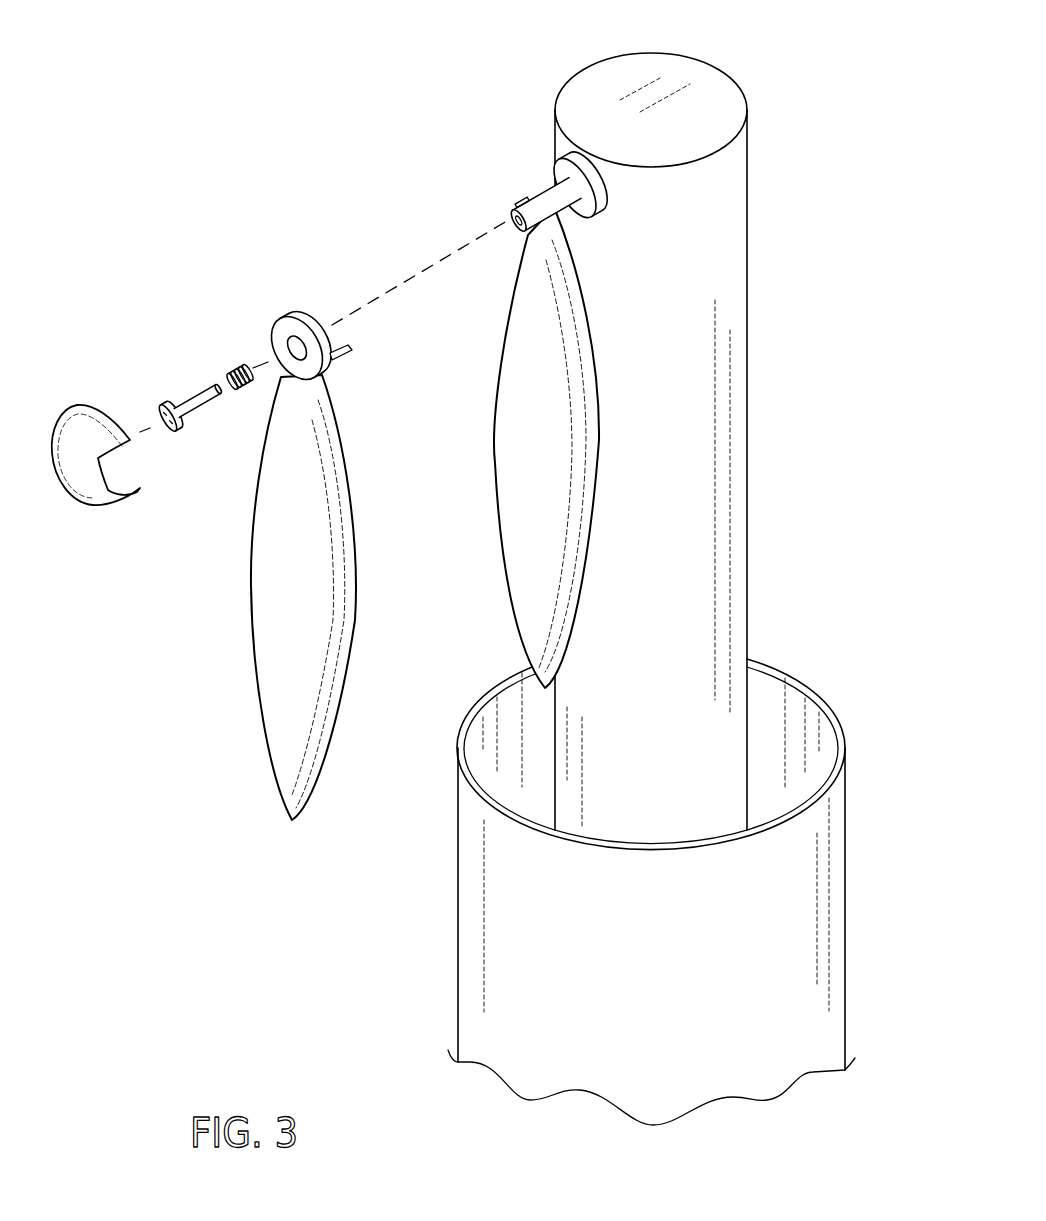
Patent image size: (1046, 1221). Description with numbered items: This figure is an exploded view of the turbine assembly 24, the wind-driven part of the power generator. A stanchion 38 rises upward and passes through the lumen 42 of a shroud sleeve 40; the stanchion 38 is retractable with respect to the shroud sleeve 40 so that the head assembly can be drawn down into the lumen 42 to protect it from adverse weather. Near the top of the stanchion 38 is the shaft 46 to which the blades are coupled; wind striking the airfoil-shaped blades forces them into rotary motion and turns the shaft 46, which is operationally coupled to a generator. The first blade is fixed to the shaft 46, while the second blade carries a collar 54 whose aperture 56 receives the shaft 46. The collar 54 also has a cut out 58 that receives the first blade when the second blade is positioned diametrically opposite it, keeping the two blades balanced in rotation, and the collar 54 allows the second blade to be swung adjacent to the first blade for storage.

The turbine assembly 24 is at (687, 584).
The stanchion 38 is at (690, 293).
The shroud sleeve 40 is at (795, 892).
The lumen 42 is at (762, 737).
The shaft 46 is at (550, 198).
The collar 54 is at (307, 327).
The aperture 56 is at (288, 345).
The cut out 58 is at (350, 350).